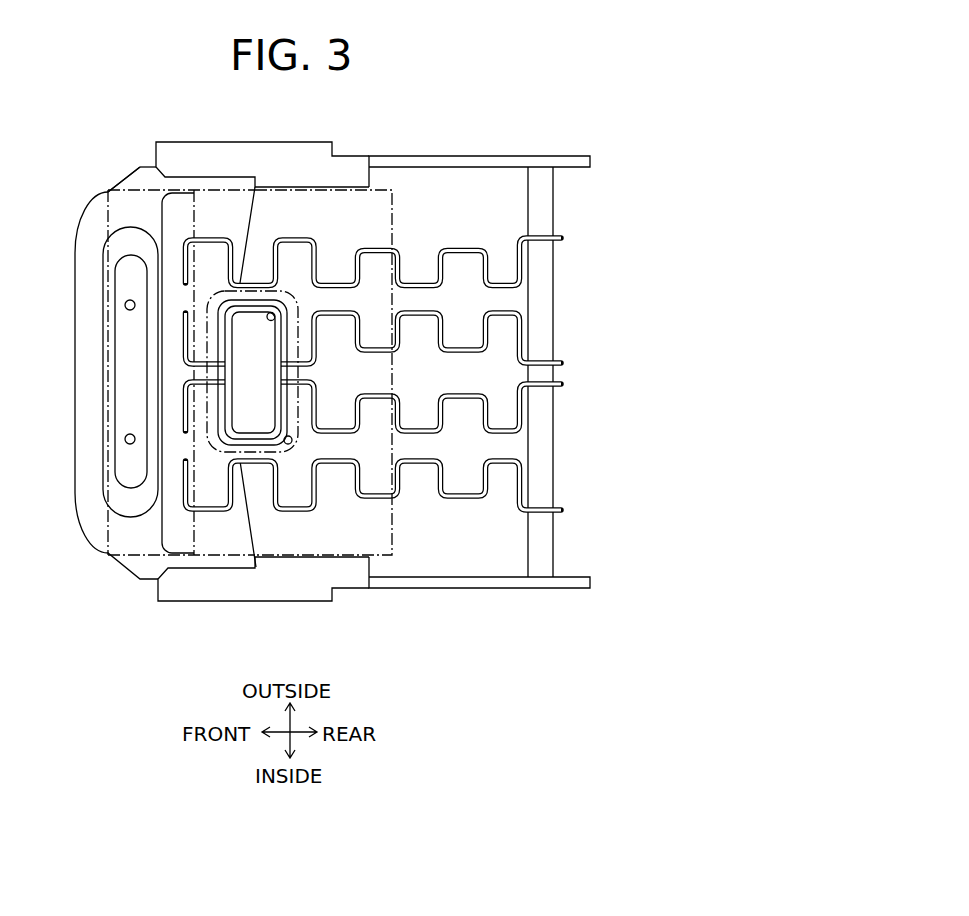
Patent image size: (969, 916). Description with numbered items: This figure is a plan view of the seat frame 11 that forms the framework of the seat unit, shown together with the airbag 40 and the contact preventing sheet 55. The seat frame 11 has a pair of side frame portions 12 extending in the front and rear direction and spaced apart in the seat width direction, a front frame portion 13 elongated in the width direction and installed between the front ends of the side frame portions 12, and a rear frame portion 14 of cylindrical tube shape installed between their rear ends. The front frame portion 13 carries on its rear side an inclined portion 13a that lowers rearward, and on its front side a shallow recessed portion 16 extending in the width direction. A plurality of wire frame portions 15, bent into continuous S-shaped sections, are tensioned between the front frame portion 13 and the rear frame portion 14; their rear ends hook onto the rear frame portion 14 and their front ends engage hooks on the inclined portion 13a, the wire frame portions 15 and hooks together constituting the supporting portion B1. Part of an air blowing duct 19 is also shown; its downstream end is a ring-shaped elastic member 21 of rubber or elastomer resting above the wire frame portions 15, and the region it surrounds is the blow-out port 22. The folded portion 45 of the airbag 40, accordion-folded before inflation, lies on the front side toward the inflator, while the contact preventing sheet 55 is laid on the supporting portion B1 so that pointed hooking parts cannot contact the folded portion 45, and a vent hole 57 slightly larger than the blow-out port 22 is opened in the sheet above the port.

The seat frame 11 is at (82, 189).
The side frame portion 12 is at (590, 161).
The front frame portion 13 is at (80, 282).
The inclined portion 13a is at (242, 210).
The rear frame portion 14 is at (548, 298).
The wire frame portion 15 is at (443, 300).
The recessed portion 16 is at (126, 376).
The air blowing duct 19 is at (252, 371).
The ring-shaped elastic member 21 is at (288, 370).
The blow-out port 22 is at (273, 314).
The airbag 40 is at (105, 169).
The folded portion 45 is at (133, 190).
The contact preventing sheet 55 is at (393, 208).
The vent hole 57 is at (291, 441).
The supporting portion B1 is at (339, 497).